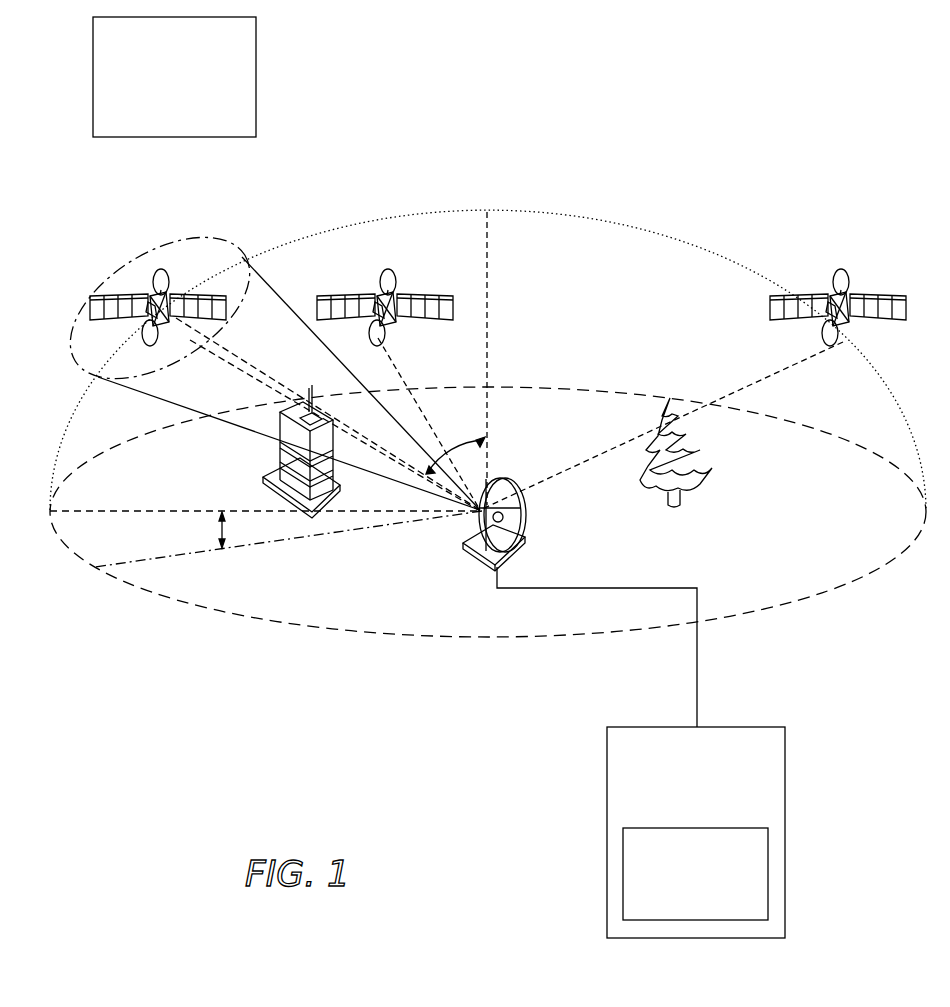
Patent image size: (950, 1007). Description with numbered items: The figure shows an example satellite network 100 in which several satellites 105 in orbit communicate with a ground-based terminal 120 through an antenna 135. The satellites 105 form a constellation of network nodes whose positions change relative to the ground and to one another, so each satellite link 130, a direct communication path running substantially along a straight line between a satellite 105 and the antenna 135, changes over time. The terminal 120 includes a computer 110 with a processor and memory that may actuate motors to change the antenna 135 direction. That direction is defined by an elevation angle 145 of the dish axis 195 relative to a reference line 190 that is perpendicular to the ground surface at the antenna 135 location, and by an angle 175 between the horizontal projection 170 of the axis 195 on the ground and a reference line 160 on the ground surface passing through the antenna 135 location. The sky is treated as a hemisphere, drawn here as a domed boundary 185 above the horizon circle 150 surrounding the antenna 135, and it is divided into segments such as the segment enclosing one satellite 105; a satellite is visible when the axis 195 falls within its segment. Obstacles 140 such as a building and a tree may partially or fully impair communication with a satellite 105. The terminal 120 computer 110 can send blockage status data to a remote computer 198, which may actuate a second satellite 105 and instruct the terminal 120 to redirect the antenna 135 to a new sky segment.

The satellite network 100 is at (712, 116).
The satellite 105 is at (162, 275).
The computer 110 is at (687, 903).
The terminal 120 is at (687, 806).
The satellite link 130 is at (383, 458).
The antenna 135 is at (477, 523).
The obstacle 140 is at (280, 458).
The elevation angle 145 is at (455, 452).
The horizon circle 150 is at (340, 630).
The reference line 160 is at (92, 512).
The horizontal projection 170 is at (176, 555).
The angle 175 is at (220, 528).
The sky hemisphere 185 is at (587, 213).
The reference line 190 is at (489, 301).
The dish axis 195 is at (230, 350).
The remote computer 198 is at (184, 121).